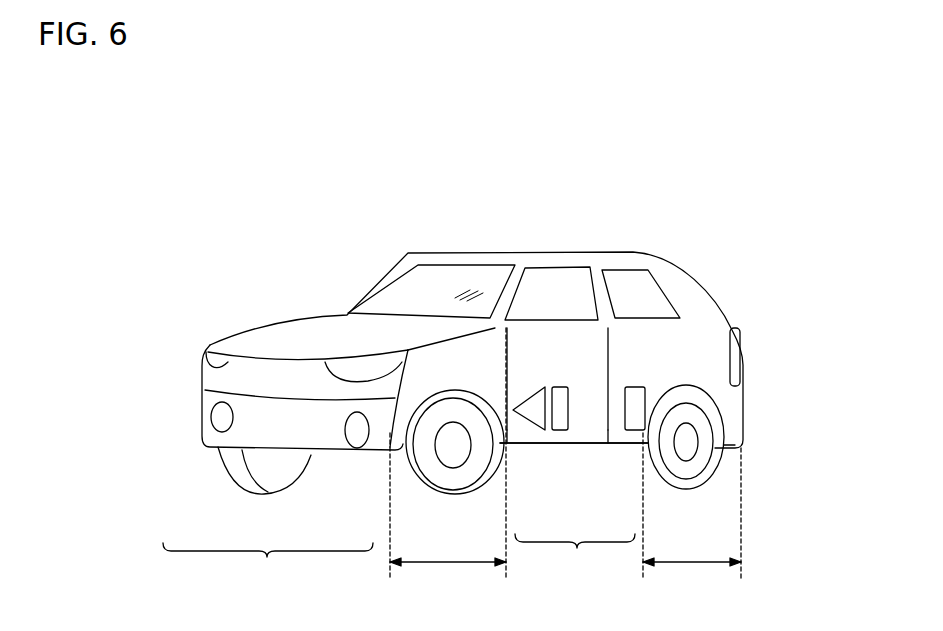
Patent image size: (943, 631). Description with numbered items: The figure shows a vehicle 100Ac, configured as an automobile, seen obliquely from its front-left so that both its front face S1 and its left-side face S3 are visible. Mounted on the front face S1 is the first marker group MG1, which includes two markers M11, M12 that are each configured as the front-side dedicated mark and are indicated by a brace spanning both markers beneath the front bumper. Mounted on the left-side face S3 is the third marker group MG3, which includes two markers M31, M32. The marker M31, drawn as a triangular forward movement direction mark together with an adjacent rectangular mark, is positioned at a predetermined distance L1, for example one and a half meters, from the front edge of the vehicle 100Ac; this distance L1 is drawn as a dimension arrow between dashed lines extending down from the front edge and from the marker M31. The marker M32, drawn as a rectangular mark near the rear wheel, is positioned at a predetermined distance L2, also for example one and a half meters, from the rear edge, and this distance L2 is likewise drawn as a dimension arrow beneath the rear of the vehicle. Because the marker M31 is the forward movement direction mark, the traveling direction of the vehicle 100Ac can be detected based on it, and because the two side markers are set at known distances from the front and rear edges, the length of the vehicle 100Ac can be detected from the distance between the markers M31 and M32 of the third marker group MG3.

The vehicle 100Ac is at (823, 127).
The front face S1 is at (238, 383).
The left-side face S3 is at (635, 362).
The marker M11 is at (204, 447).
The marker M12 is at (345, 443).
The first marker group MG1 is at (268, 568).
The predetermined distance L1 is at (448, 463).
The marker M31 is at (548, 432).
The marker M32 is at (632, 432).
The third marker group MG3 is at (575, 556).
The predetermined distance L2 is at (692, 517).